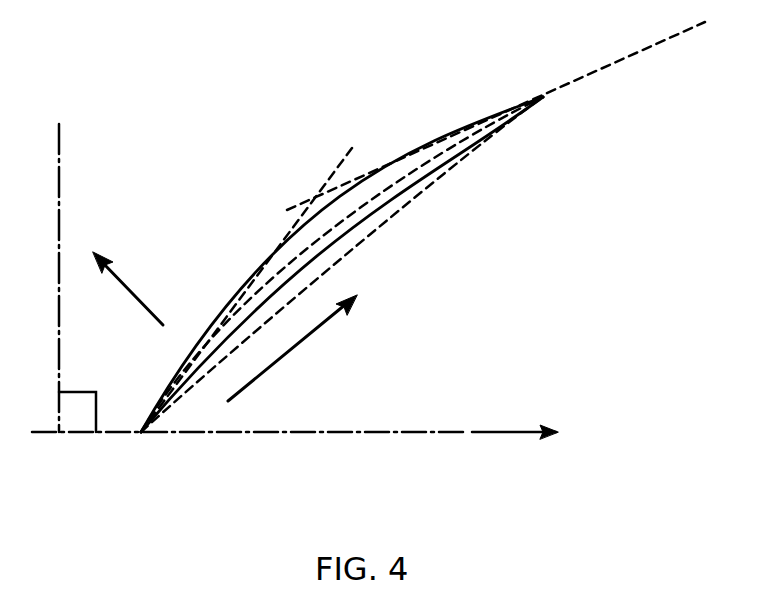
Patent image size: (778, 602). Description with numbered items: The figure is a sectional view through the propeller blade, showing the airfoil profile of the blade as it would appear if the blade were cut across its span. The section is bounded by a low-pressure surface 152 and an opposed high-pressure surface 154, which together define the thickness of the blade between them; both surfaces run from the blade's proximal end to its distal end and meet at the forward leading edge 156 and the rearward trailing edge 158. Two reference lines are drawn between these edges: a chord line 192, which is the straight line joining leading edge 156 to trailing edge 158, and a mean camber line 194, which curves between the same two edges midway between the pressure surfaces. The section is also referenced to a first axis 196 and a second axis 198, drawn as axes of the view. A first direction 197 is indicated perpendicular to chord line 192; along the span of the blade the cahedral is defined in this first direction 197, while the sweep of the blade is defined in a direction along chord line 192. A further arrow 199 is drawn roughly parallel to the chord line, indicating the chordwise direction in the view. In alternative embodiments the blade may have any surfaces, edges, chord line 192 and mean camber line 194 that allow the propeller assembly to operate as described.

The low-pressure surface 152 is at (336, 199).
The high-pressure surface 154 is at (395, 198).
The leading edge 156 is at (140, 434).
The trailing edge 158 is at (543, 96).
The chord line 192 is at (443, 173).
The mean camber line 194 is at (362, 208).
The first axis 196 is at (60, 141).
The first direction 197 is at (133, 286).
The second axis 198 is at (444, 431).
The second direction arrow 199 is at (293, 348).